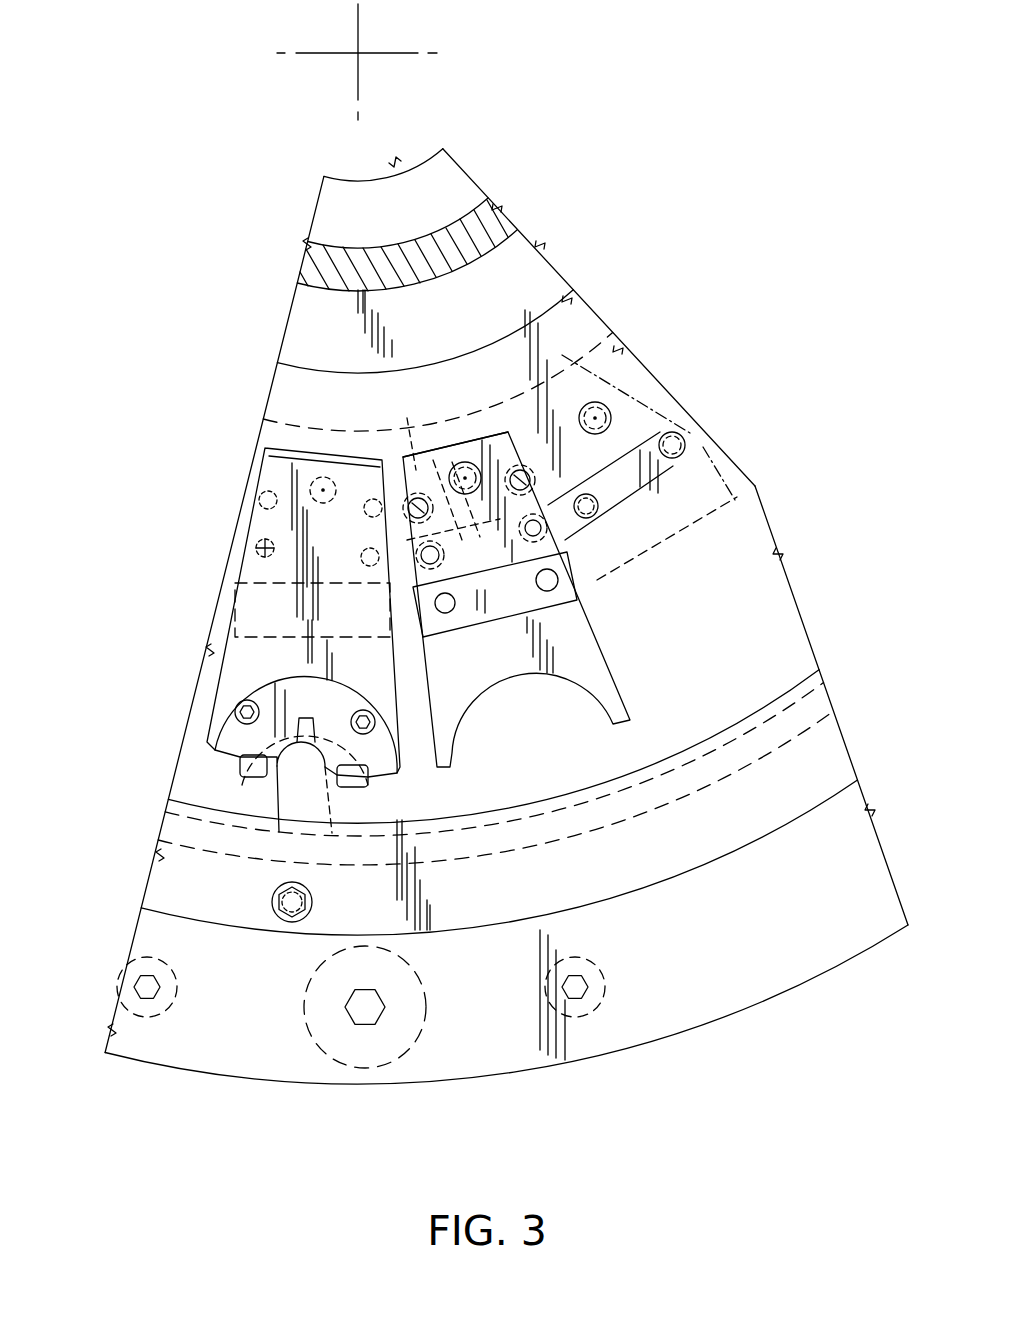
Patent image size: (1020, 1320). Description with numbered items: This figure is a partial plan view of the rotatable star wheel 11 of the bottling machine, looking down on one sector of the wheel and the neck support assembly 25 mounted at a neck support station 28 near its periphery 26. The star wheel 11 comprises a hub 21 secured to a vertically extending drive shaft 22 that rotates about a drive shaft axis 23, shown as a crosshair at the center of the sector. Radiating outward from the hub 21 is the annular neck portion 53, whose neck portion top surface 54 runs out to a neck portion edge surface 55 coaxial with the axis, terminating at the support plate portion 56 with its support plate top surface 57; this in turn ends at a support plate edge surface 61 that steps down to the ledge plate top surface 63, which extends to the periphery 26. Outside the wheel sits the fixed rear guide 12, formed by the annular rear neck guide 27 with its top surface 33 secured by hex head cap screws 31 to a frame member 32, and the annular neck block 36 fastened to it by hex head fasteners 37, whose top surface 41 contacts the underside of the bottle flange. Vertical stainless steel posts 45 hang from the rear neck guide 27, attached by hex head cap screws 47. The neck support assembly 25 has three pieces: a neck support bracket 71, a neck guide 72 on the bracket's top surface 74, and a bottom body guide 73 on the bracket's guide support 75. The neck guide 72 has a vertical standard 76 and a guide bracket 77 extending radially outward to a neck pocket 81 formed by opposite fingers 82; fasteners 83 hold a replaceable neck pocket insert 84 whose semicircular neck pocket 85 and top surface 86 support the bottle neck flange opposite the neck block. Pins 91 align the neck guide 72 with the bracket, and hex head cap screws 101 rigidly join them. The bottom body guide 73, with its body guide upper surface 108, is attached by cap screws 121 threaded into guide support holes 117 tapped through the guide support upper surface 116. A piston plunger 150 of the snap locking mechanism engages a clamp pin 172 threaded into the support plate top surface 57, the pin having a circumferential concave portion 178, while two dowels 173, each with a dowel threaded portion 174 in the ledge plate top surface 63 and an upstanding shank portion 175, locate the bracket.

The rotatable star wheel 11 is at (258, 378).
The fixed rear guide 12 is at (850, 972).
The hub 21 is at (483, 210).
The drive shaft 22 is at (452, 168).
The drive shaft axis 23 is at (360, 51).
The neck support assembly 25 is at (204, 644).
The periphery 26 is at (698, 481).
The rear neck guide 27 is at (796, 990).
The neck support station 28 is at (245, 470).
The hex head cap screw 31 is at (368, 1018).
The frame member 32 is at (333, 1060).
The top surface 33 is at (697, 1000).
The annular neck block 36 is at (848, 748).
The hex head fastener 37 is at (289, 916).
The top surface 41 is at (836, 723).
The vertical stainless steel post 45 is at (150, 1024).
The hex head cap screw 47 is at (140, 985).
The annular neck portion 53 is at (542, 245).
The neck portion top surface 54 is at (303, 302).
The neck portion edge surface 55 is at (278, 362).
The support plate portion 56 is at (595, 308).
The support plate top surface 57 is at (562, 305).
The support plate edge surface 61 is at (695, 428).
The ledge plate top surface 63 is at (710, 421).
The neck support bracket 71 is at (505, 423).
The neck guide 72 is at (237, 507).
The bottom body guide 73 is at (608, 672).
The top surface 74 is at (460, 462).
The guide support 75 is at (548, 612).
The vertical standard 76 is at (316, 480).
The guide bracket 77 is at (215, 621).
The neck pocket 81 is at (375, 848).
The finger 82 is at (197, 728).
The fastener 83 is at (255, 700).
The neck pocket insert 84 is at (205, 745).
The neck pocket 85 is at (268, 812).
The top surface 86 is at (230, 763).
The pin 91 is at (243, 546).
The hex head cap screw 101 is at (243, 487).
The body guide upper surface 108 is at (577, 628).
The guide support upper surface 116 is at (512, 612).
The guide support hole 117 is at (590, 552).
The cap screw 121 is at (445, 614).
The piston plunger 150 is at (407, 418).
The clamp pin 172 is at (257, 423).
The dowel 173 is at (661, 422).
The dowel threaded portion 174 is at (707, 443).
The shank portion 175 is at (673, 466).
The circumferential concave portion 178 is at (573, 372).